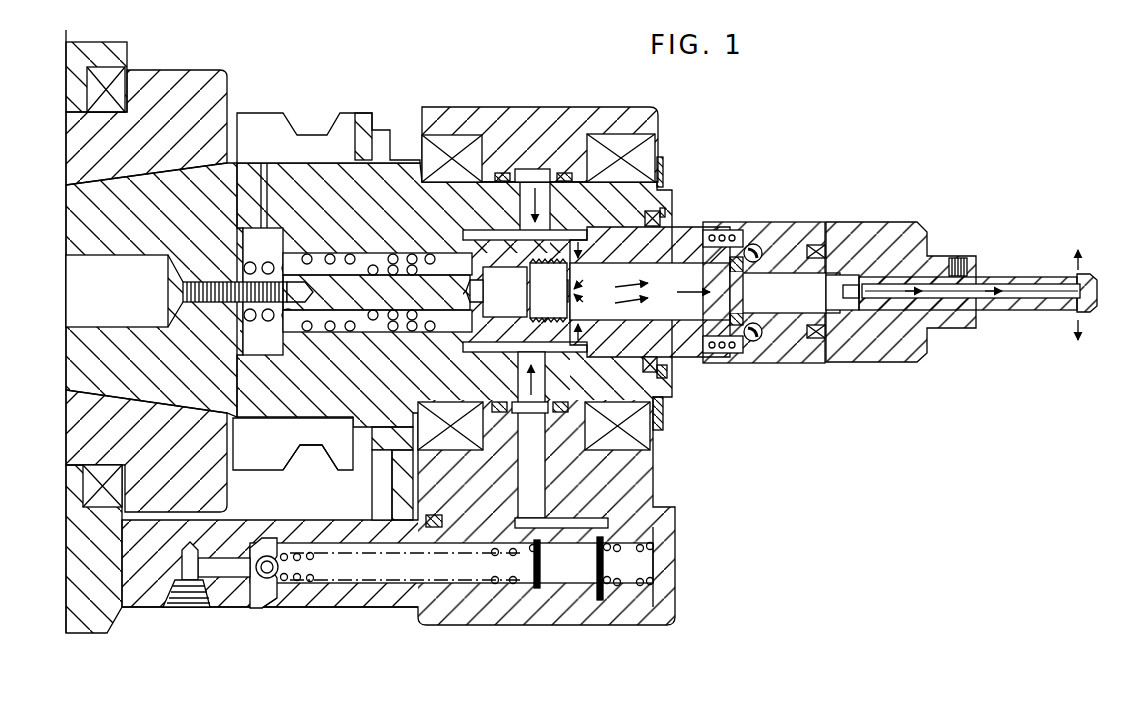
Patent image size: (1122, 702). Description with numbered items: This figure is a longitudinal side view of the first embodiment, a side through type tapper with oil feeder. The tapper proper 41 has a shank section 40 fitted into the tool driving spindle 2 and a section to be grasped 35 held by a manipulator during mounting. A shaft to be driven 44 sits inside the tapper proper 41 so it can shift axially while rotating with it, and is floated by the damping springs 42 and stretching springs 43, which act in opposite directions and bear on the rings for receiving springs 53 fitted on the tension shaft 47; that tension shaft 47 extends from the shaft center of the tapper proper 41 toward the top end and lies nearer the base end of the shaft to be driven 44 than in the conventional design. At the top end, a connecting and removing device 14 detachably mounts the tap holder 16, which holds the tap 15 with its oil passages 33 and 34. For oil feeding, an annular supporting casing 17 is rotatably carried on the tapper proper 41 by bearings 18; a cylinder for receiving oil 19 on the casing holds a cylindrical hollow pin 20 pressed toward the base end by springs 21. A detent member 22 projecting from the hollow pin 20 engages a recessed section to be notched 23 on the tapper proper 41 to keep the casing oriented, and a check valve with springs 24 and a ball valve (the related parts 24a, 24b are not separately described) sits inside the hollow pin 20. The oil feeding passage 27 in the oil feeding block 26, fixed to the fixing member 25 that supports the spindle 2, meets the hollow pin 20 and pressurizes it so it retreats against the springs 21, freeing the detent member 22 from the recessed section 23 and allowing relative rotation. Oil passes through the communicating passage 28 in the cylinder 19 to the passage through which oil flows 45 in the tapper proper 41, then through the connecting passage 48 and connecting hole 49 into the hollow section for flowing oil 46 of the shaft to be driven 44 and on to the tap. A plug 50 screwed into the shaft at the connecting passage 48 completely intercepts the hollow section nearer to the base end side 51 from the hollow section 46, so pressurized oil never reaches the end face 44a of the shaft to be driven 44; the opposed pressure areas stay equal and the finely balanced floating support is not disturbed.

The tool driving spindle 2 is at (207, 95).
The connecting and removing device 14 is at (767, 227).
The tap 15 is at (1037, 277).
The tap holder 16 is at (897, 237).
The annular supporting casing 17 is at (477, 122).
The bearings 18 is at (605, 138).
The cylinder for receiving oil 19 is at (630, 497).
The hollow pin 20 is at (403, 600).
The springs 21 is at (617, 588).
The detent member 22 is at (398, 488).
The recessed section to be notched 23 is at (377, 440).
The springs 24 is at (275, 545).
The holes 24a is at (308, 580).
The bracket foot 24b is at (275, 600).
The fixing member 25 is at (102, 620).
The oil feeding block 26 is at (138, 590).
The oil feeding passage 27 is at (193, 573).
The communicating passage 28 is at (540, 452).
The oil passage 33 is at (820, 288).
The oil passage 34 is at (1050, 298).
The section to be grasped 35 is at (297, 130).
The shank section 40 is at (193, 183).
The tapper proper 41 is at (377, 177).
The damping springs 42 is at (247, 318).
The stretching springs 43 is at (330, 331).
The shaft to be driven 44 is at (363, 345).
The end face 44a is at (287, 343).
The passage through which oil flows 45 is at (657, 432).
The hollow section for flowing oil 46 is at (688, 310).
The tension shaft 47 is at (355, 268).
The connecting passage 48 is at (635, 362).
The connecting hole 49 is at (683, 290).
The plug 50 is at (523, 277).
The hollow section nearer to the base end side 51 is at (290, 262).
The rings for receiving springs 53 is at (447, 262).